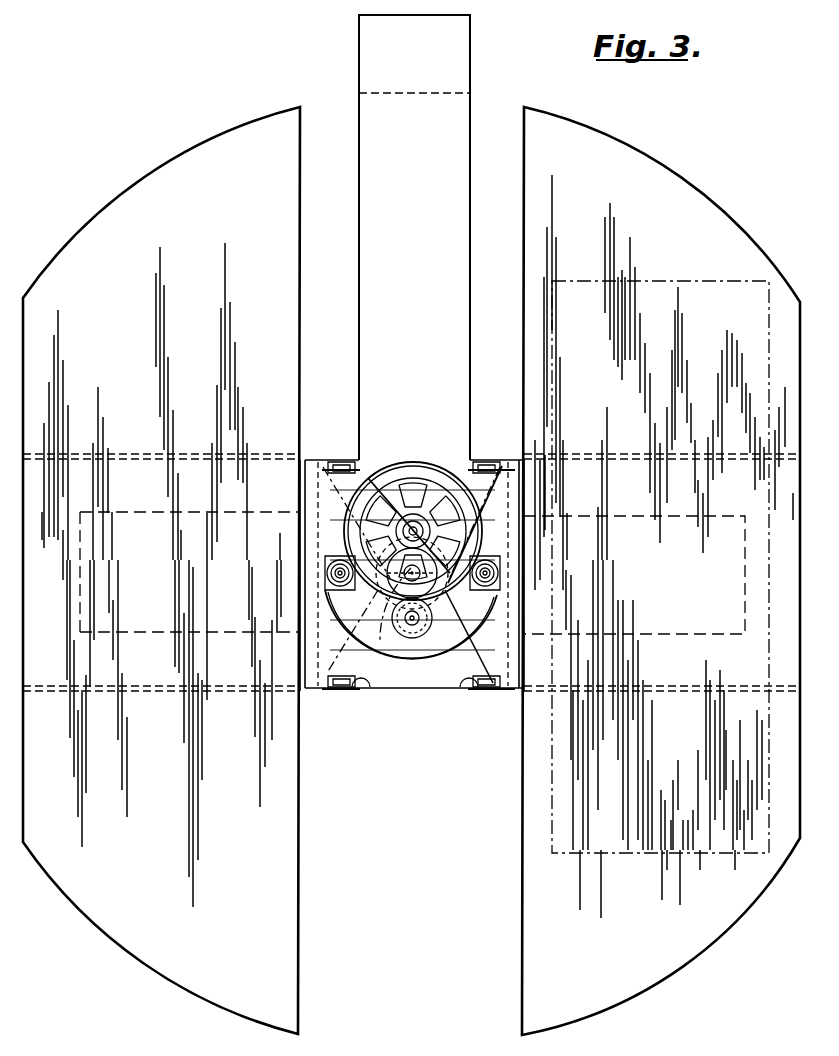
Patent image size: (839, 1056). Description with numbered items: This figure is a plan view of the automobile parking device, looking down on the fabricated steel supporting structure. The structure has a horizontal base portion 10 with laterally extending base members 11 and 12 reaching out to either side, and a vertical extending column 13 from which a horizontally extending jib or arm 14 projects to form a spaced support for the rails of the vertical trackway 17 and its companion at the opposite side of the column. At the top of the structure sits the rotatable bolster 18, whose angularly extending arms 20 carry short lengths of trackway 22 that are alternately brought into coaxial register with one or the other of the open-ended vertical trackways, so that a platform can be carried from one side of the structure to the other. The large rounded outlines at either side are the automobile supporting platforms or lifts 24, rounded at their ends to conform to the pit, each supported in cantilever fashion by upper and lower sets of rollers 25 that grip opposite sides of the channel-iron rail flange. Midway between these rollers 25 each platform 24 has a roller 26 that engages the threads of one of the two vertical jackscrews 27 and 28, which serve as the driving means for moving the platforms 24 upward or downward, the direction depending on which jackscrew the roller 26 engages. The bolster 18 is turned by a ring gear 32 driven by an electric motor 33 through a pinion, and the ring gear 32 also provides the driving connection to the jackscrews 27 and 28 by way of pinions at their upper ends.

The horizontal base portion 10 is at (417, 686).
The laterally extending base member 11 is at (656, 630).
The laterally extending base member 12 is at (140, 630).
The vertical extending column 13 is at (462, 52).
The horizontally extending jib or arm 14 is at (414, 237).
The vertical extending trackway 17 is at (400, 573).
The rotatable bolster 18 is at (412, 556).
The angularly extending arm 20 is at (411, 559).
The short length of trackway 22 is at (478, 575).
The automobile supporting platform or lift 24 is at (411, 571).
The roller 25 is at (449, 571).
The roller 26 is at (386, 553).
The jackscrew 27 is at (328, 586).
The jackscrew 28 is at (500, 592).
The ring gear 32 is at (396, 468).
The electric motor 33 is at (409, 640).